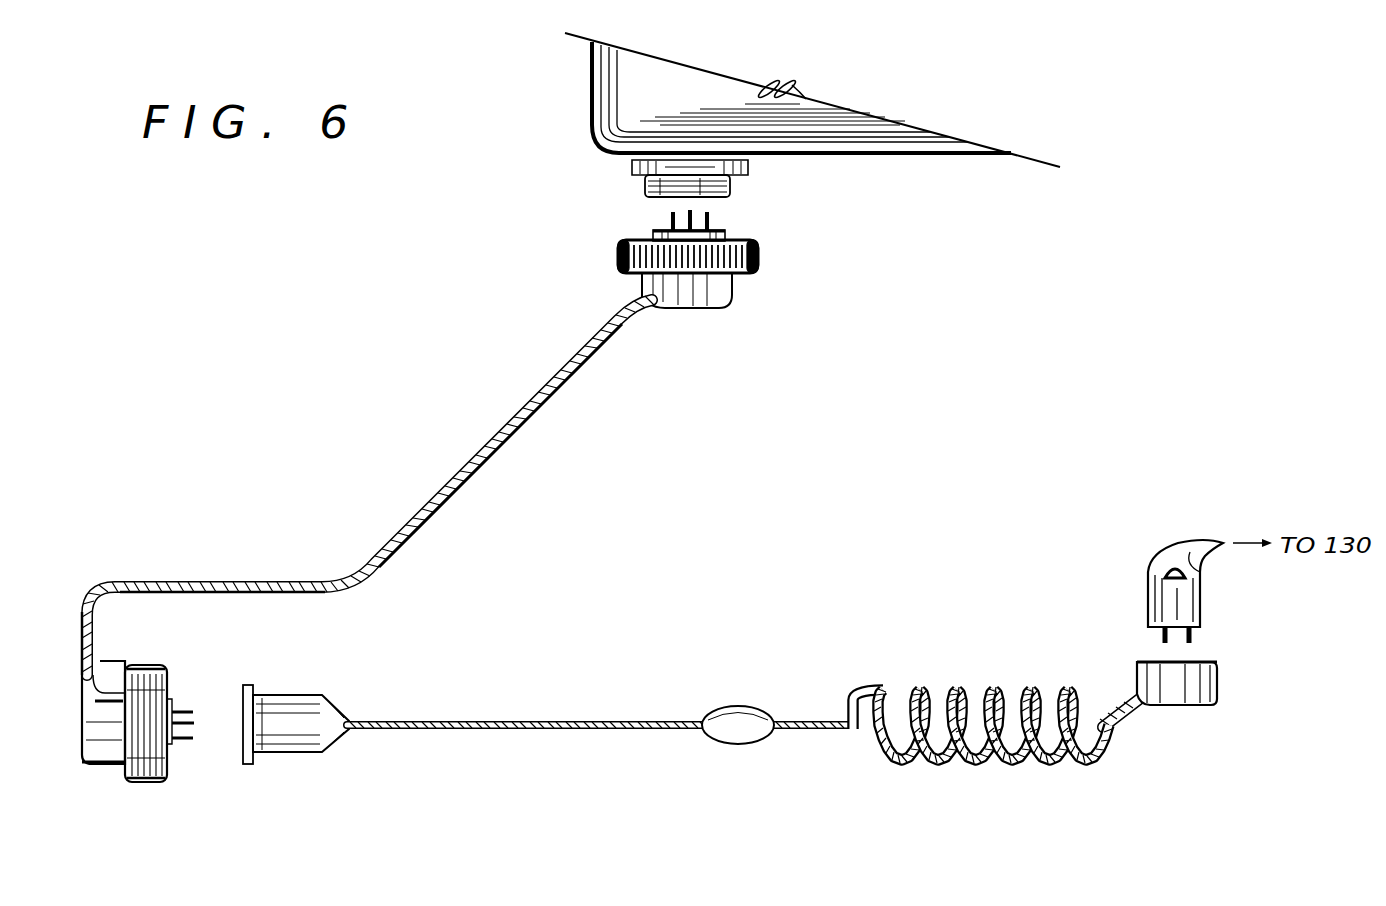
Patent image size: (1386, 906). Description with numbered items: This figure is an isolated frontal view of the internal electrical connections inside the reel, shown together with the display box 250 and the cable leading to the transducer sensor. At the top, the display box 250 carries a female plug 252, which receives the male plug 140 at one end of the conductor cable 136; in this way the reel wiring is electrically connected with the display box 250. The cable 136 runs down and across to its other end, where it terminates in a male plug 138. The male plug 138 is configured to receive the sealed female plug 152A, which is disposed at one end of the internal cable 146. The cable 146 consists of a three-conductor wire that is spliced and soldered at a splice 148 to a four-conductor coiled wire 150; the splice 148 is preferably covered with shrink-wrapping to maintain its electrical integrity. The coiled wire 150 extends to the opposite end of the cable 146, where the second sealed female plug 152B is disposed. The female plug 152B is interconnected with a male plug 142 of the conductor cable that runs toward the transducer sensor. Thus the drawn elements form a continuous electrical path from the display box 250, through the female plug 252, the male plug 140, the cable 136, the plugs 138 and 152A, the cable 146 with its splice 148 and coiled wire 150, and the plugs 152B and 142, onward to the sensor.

The display box 250 is at (872, 110).
The female plug 252 is at (733, 185).
The male plug 140 is at (618, 257).
The conductor cable 136 is at (265, 580).
The male plug 138 is at (155, 785).
The female plug 152A is at (272, 694).
The cable 146 is at (738, 668).
The splice 148 is at (710, 712).
The coiled wire 150 is at (953, 760).
The male plug 142 is at (1207, 605).
The female plug 152B is at (1217, 673).